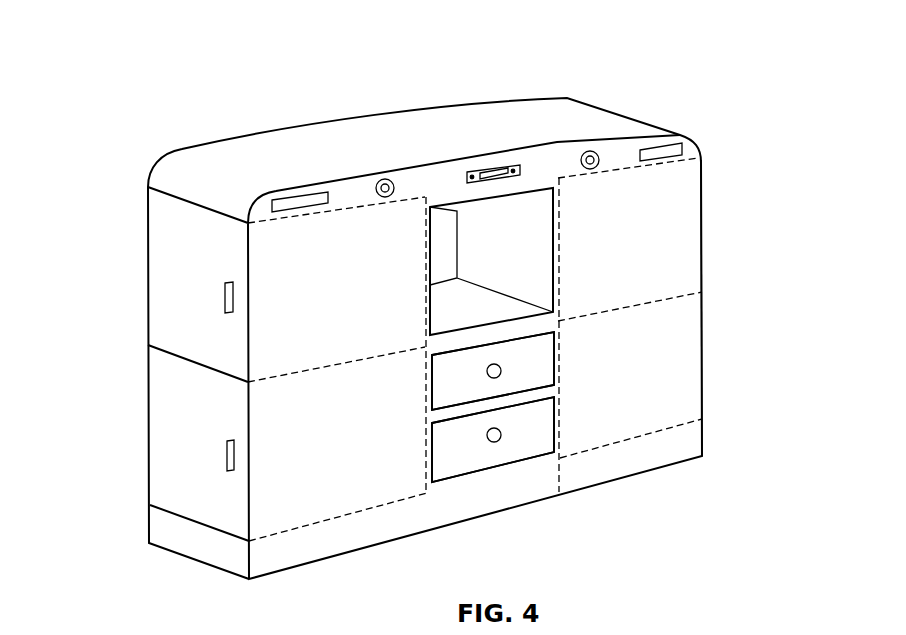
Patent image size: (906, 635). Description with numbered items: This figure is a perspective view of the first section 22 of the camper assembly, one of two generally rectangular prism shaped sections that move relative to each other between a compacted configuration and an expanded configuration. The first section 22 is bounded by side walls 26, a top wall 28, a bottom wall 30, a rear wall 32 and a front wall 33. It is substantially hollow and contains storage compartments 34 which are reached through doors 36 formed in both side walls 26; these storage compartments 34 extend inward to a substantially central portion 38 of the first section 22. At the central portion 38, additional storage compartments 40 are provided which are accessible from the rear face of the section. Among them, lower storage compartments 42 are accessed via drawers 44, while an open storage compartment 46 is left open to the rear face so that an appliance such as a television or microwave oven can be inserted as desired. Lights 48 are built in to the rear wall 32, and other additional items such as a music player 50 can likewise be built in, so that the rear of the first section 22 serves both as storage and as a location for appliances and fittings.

The first section 22 is at (213, 128).
The side walls 26 is at (193, 402).
The top wall 28 is at (390, 132).
The bottom wall 30 is at (360, 552).
The rear wall 32 is at (668, 243).
The front wall 33 is at (146, 237).
The storage compartments 34 is at (183, 305).
The doors 36 is at (225, 294).
The central portion 38 is at (518, 142).
The additional storage compartments 40 is at (542, 415).
The lower storage compartments 42 is at (467, 382).
The drawers 44 is at (530, 428).
The open storage compartment 46 is at (500, 248).
The lights 48 is at (383, 179).
The music player 50 is at (496, 168).